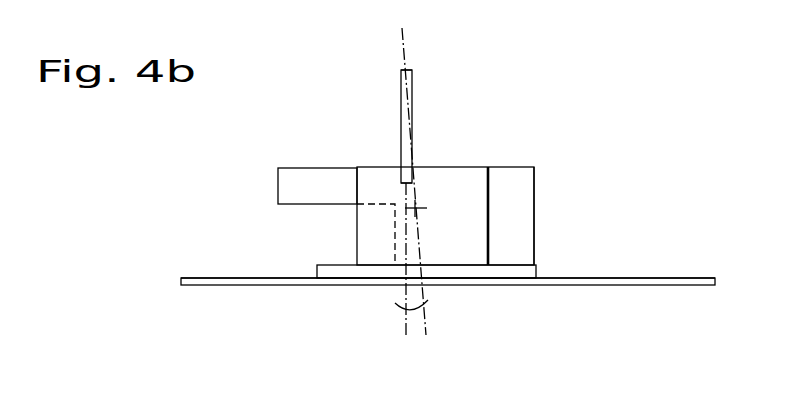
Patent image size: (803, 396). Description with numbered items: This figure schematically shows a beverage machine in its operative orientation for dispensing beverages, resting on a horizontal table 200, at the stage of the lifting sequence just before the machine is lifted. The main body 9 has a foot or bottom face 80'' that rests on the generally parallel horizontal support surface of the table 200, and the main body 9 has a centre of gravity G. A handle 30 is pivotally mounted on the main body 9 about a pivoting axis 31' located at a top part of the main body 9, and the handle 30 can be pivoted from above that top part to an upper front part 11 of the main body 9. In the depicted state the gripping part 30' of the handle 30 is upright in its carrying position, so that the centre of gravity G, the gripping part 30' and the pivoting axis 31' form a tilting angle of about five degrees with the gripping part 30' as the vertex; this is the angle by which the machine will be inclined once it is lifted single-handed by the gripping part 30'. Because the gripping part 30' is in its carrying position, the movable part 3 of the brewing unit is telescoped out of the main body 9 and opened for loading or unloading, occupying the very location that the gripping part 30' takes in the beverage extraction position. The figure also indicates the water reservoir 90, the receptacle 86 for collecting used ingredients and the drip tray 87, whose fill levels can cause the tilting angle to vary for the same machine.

The movable part 3 is at (310, 190).
The main body 9 is at (448, 100).
The upper front part 11 is at (276, 170).
The handle 30 is at (364, 126).
The gripping part 30' is at (357, 46).
The pivoting axis 31' is at (365, 156).
The receptacle 86 is at (370, 240).
The drip tray 87 is at (317, 272).
The water reservoir 90 is at (512, 239).
The bottom face 80'' is at (448, 320).
The table 200 is at (706, 285).
The centre of gravity G is at (426, 192).